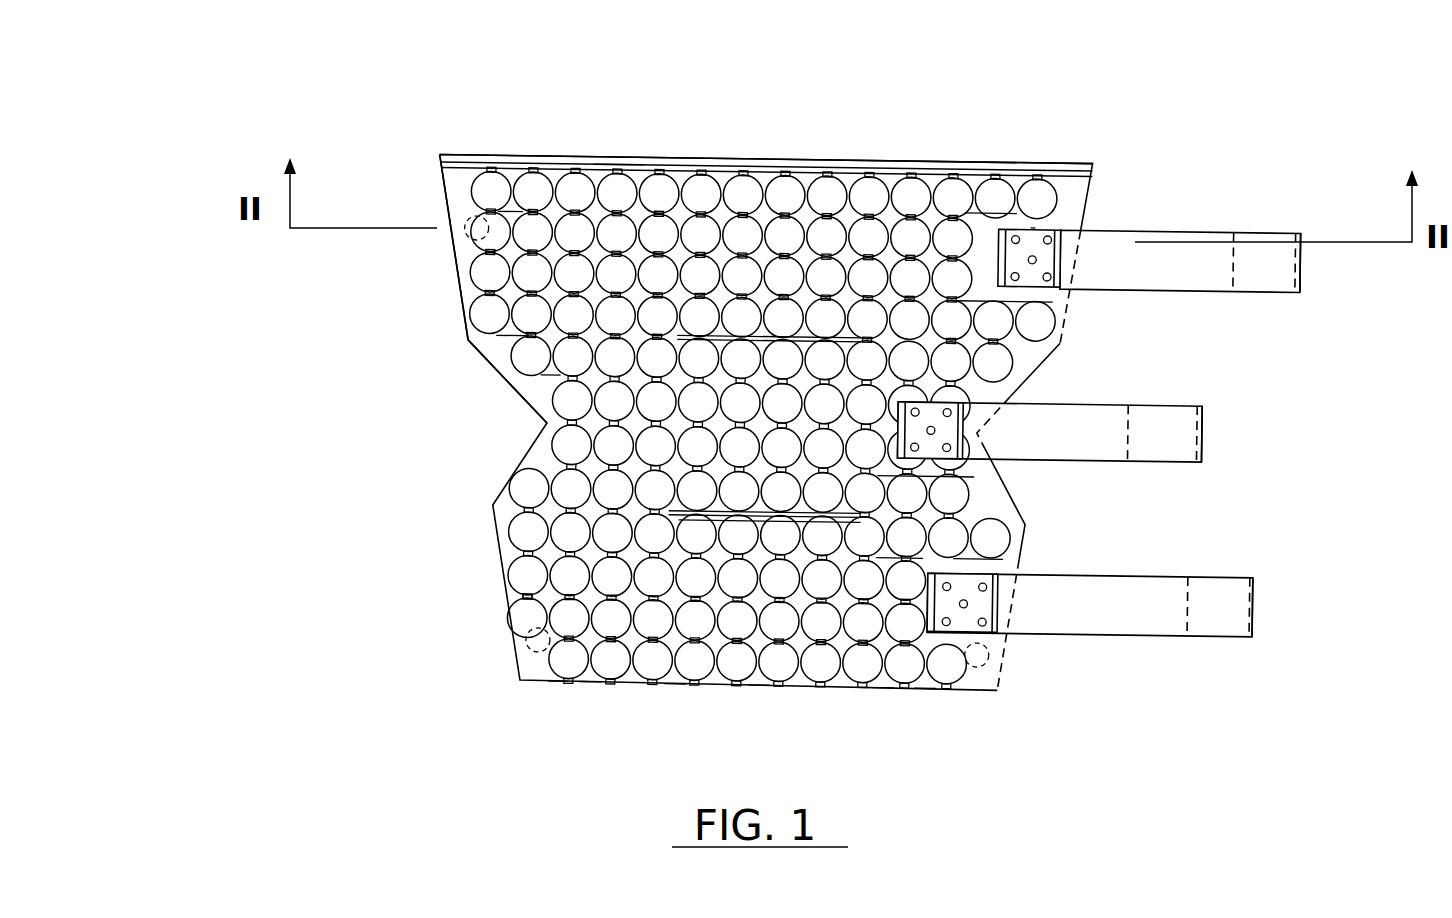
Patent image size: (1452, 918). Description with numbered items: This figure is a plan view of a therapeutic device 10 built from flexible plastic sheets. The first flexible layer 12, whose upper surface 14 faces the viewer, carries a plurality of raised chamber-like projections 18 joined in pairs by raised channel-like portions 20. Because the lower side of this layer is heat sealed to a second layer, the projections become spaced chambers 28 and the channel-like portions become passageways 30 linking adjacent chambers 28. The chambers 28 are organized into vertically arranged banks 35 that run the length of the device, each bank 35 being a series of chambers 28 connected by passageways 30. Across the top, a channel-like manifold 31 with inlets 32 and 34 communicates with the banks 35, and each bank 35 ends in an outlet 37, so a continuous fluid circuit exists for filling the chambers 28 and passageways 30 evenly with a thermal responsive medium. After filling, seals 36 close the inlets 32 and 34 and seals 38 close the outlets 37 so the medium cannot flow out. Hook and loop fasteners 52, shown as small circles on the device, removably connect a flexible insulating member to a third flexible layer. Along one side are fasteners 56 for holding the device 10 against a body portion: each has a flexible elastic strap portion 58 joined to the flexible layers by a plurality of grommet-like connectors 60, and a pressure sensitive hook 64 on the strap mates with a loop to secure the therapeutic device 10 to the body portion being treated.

The therapeutic device 10 is at (272, 566).
The first flexible layer 12 is at (456, 262).
The upper surface 14 is at (497, 350).
The raised chamber-like projections 18 is at (797, 178).
The raised channel-like portions 20 is at (537, 182).
The chambers 28 is at (530, 177).
The passageways 30 is at (863, 182).
The manifold 31 is at (610, 168).
The inlet 32 is at (448, 186).
The inlet 34 is at (1070, 160).
The banks of chambers 35 is at (977, 228).
The seal 36 is at (442, 163).
The outlet 37 is at (592, 688).
The seal 38 is at (562, 684).
The pressure sensitive hook and loop fastener 52 is at (468, 222).
The fastener 56 is at (1148, 282).
The flexible elastic strap portion 58 is at (1300, 258).
The grommet-like connector 60 is at (1048, 282).
The hook 64 is at (1250, 284).